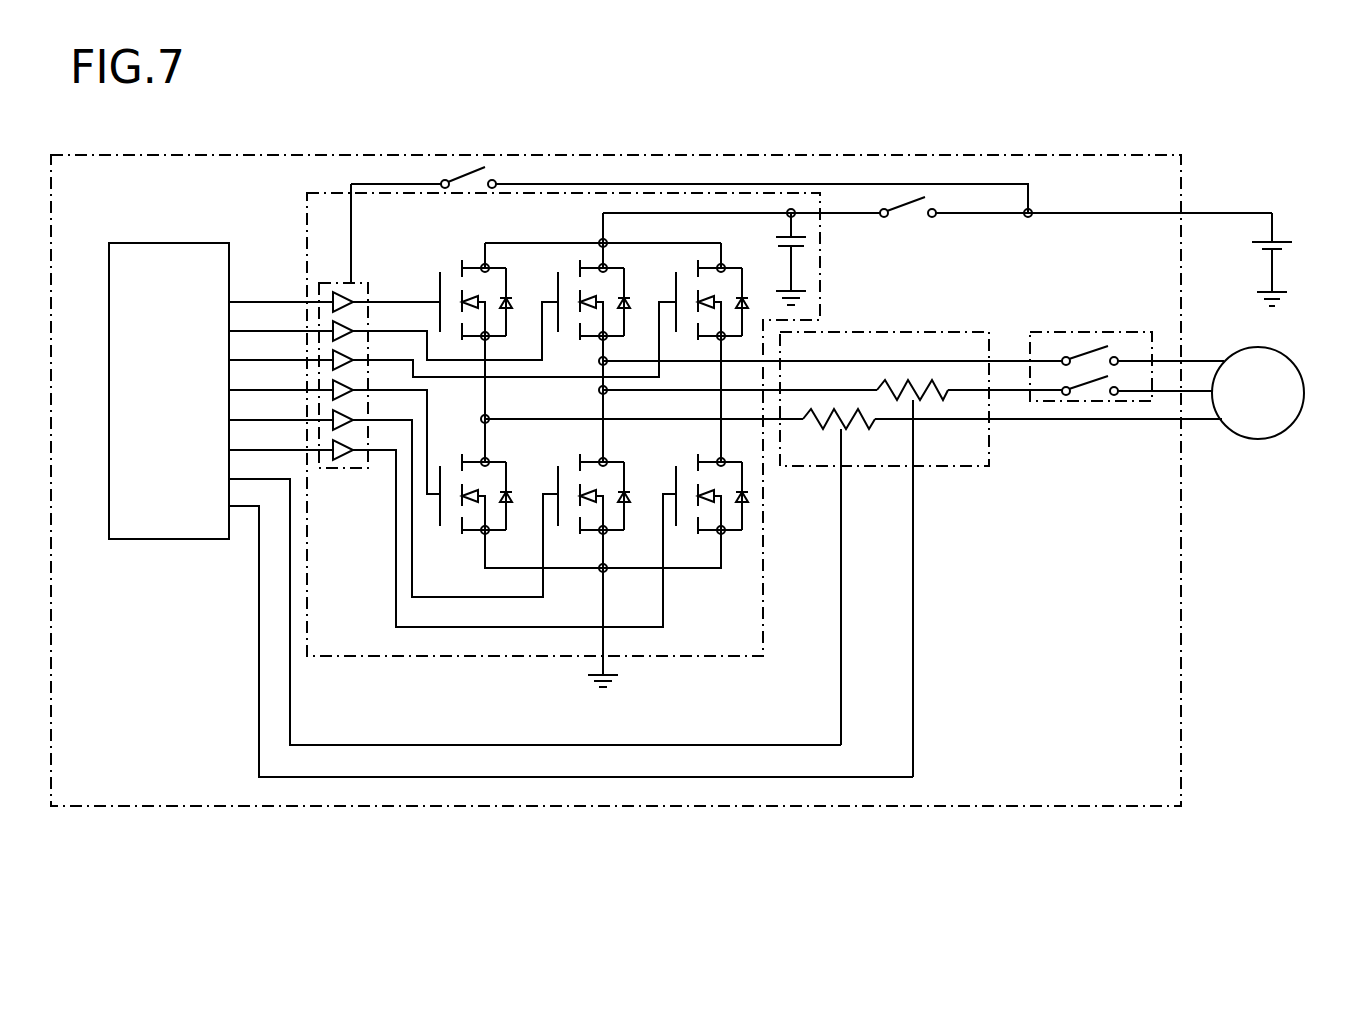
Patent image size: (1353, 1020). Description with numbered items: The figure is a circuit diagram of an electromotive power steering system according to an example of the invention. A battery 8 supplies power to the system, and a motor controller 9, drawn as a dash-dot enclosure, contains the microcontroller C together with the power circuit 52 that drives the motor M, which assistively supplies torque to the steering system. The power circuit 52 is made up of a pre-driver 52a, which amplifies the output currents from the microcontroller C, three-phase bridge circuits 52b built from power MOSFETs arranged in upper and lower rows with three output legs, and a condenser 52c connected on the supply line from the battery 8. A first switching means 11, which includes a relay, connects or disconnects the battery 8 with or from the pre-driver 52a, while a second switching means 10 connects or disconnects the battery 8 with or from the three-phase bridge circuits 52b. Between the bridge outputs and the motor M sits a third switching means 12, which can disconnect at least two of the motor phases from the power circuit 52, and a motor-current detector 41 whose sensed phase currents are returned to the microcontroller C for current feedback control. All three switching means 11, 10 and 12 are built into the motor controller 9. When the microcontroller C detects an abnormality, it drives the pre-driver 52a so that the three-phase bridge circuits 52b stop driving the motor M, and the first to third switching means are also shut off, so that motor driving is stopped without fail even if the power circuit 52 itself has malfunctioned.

The battery 8 is at (1285, 240).
The motor controller 9 is at (897, 807).
The second switching means 10 is at (908, 200).
The first switching means 11 is at (455, 176).
The third switching means 12 is at (1065, 332).
The motor-current detector 41 is at (928, 332).
The power circuit 52 is at (672, 657).
The pre-driver 52a is at (330, 283).
The three-phase bridge circuits 52b is at (690, 570).
The condenser 52c is at (802, 228).
The microcontroller C is at (162, 262).
The motor M is at (1262, 440).